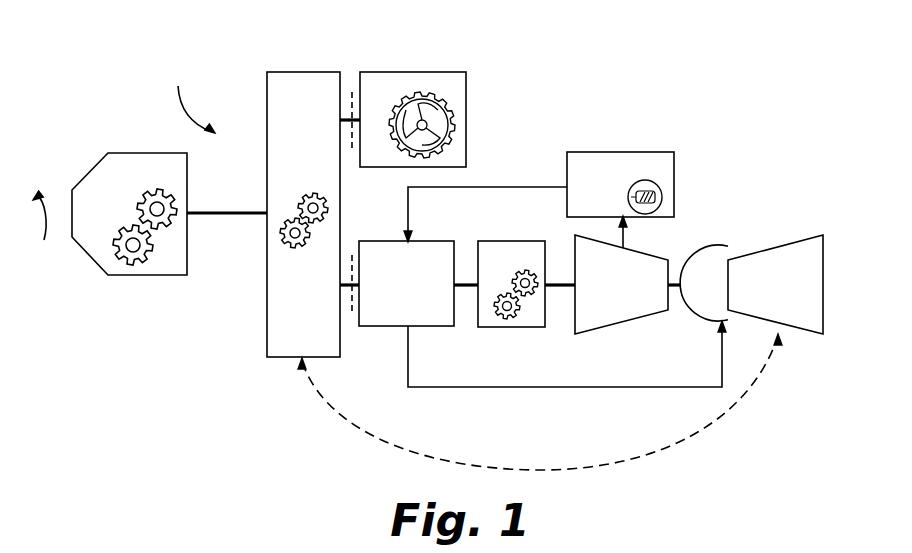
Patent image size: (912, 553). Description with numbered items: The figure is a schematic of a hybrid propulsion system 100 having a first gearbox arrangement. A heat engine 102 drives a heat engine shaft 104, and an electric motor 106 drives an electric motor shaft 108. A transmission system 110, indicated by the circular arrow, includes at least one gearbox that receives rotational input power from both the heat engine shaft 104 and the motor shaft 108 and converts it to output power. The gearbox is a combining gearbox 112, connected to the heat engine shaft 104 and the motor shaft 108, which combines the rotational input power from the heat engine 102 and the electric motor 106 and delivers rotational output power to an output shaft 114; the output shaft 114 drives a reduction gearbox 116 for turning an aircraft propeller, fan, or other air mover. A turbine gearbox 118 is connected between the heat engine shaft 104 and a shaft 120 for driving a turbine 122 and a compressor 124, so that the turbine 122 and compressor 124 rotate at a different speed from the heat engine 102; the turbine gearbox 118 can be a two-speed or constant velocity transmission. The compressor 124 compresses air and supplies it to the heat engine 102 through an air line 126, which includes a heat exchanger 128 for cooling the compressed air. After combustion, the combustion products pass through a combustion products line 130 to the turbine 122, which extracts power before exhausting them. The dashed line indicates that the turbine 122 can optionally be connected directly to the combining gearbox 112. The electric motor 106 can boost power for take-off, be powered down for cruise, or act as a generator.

The hybrid propulsion system 100 is at (67, 26).
The heat engine 102 is at (393, 327).
The heat engine shaft 104 is at (349, 257).
The electric motor 106 is at (467, 87).
The electric motor shaft 108 is at (349, 94).
The transmission system 110 is at (186, 95).
The combining gearbox 112 is at (282, 70).
The output shaft 114 is at (226, 212).
The reduction gearbox 116 is at (146, 152).
The turbine gearbox 118 is at (498, 327).
The shaft 120 is at (557, 283).
The turbine 122 is at (745, 257).
The compressor 124 is at (628, 322).
The air line 126 is at (535, 187).
The heat exchanger 128 is at (597, 152).
The combustion products line 130 is at (545, 387).